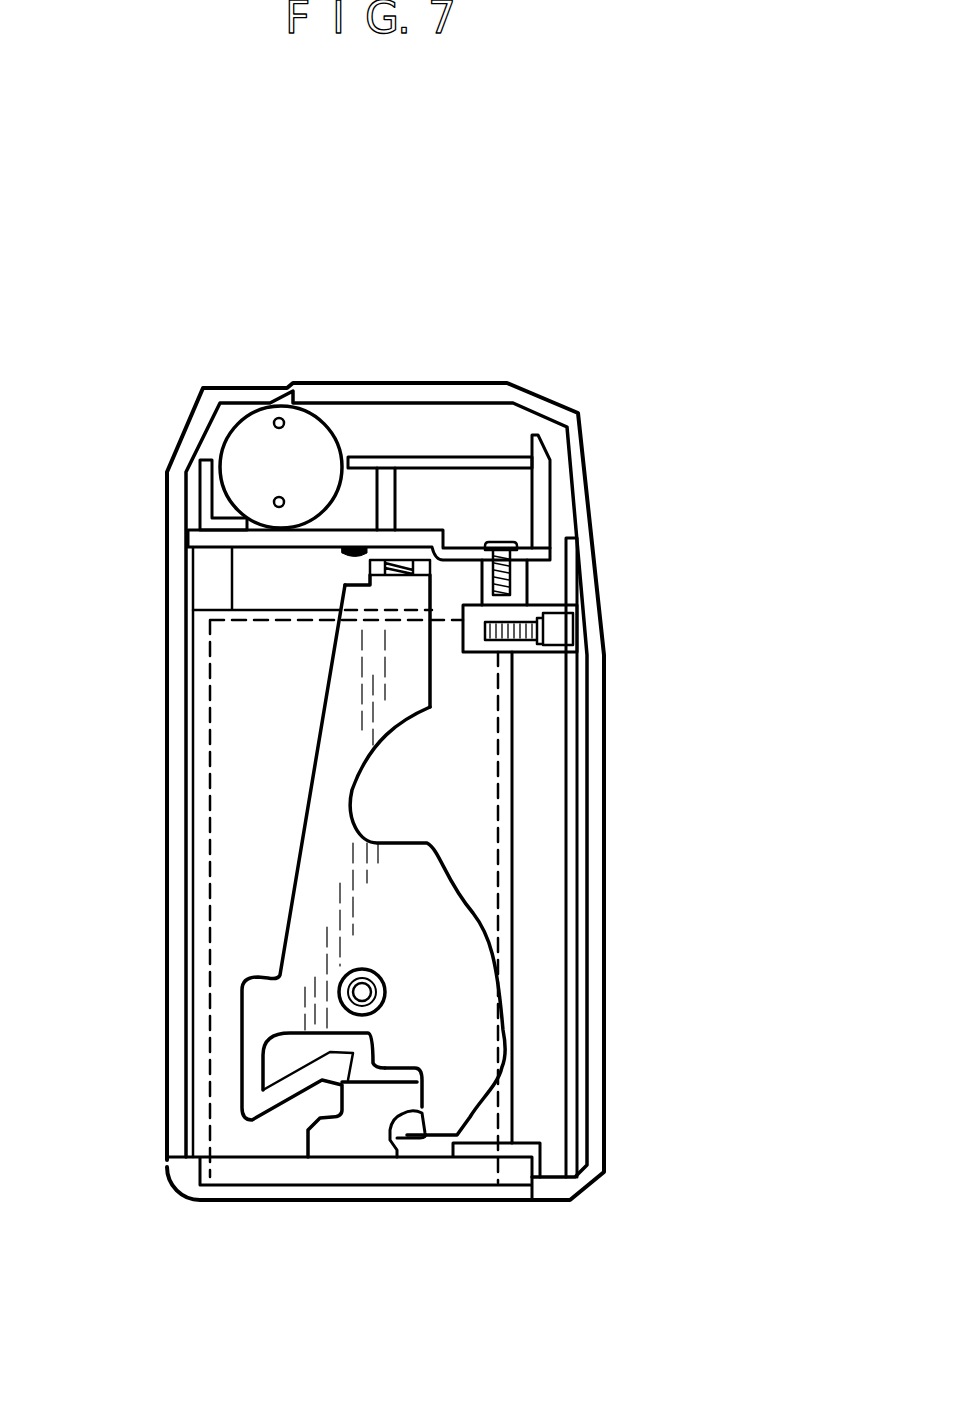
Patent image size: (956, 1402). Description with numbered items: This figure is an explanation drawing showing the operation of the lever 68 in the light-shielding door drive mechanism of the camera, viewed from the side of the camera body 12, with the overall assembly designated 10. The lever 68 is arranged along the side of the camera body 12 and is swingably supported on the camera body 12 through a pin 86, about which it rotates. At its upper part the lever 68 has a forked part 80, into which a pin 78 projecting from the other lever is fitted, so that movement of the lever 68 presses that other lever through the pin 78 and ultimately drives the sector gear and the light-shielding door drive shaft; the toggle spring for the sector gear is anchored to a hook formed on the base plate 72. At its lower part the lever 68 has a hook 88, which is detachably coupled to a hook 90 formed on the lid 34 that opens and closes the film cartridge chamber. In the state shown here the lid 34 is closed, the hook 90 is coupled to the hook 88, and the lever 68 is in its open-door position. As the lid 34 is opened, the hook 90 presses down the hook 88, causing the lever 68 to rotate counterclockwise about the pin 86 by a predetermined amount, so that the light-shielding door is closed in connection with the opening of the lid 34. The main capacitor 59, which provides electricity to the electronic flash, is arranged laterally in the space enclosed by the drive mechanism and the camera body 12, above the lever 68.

The latch device 10 is at (609, 361).
The camera body 12 is at (432, 383).
The lid 34 is at (332, 1200).
The main capacitor 59 is at (337, 422).
The lever 68 is at (320, 882).
The base plate 72 is at (413, 532).
The pin 78 is at (393, 563).
The forked part 80 is at (370, 565).
The pin 86 is at (372, 981).
The hook 88 is at (398, 1093).
The hook 90 is at (405, 1127).